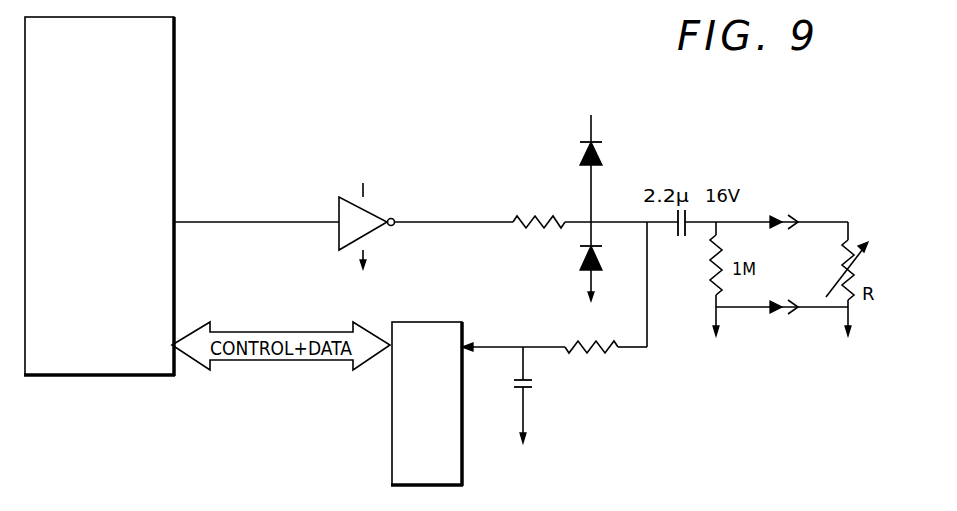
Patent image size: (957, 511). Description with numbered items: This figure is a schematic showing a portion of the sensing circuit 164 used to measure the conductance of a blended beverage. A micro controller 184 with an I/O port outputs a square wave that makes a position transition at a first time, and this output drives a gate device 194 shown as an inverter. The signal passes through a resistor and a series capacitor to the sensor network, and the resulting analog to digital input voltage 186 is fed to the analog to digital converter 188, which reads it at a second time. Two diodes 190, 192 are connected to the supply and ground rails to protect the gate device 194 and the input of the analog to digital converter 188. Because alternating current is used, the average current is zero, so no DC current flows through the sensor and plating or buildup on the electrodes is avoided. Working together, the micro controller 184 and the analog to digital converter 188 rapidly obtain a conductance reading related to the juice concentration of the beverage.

The micro controller 184 is at (175, 53).
The sensing circuit 164 is at (535, 80).
The diode 190 is at (582, 151).
The diode 192 is at (580, 257).
The gate device 194 is at (378, 232).
The analog to digital input voltage 186 is at (500, 352).
The analog to digital converter 188 is at (464, 462).